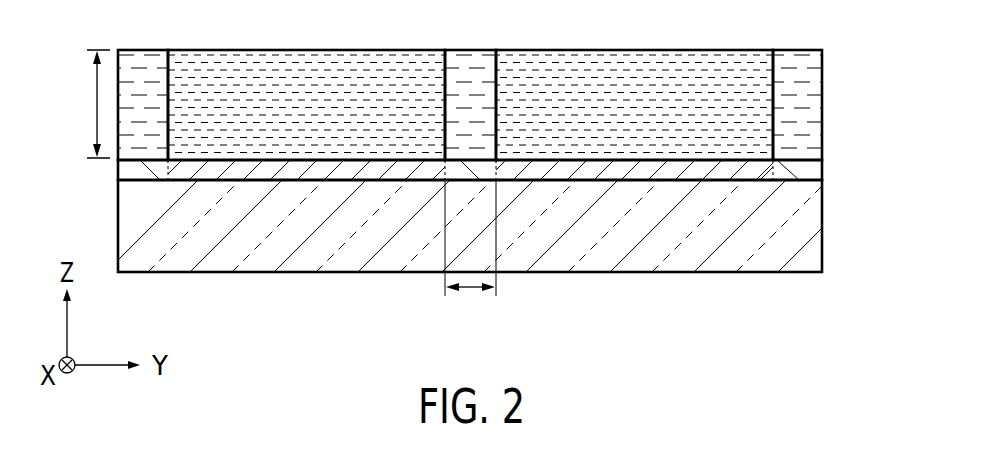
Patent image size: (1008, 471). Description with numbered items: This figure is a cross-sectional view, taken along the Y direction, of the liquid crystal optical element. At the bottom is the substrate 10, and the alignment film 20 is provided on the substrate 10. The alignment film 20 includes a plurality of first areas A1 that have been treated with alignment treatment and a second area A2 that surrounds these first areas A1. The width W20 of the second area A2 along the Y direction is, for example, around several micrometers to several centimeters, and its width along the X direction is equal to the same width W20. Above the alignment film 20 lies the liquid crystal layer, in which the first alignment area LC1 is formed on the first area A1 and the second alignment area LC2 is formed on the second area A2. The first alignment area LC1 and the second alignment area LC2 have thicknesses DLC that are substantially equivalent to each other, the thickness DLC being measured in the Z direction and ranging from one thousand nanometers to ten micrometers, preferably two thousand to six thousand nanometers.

The substrate 10 is at (815, 247).
The alignment film 20 is at (812, 172).
The first alignment area LC1 is at (292, 58).
The second alignment area LC2 is at (140, 58).
The thickness DLC is at (78, 104).
The width of the second area W20 is at (470, 254).
The first area A1 is at (287, 172).
The second area A2 is at (145, 165).